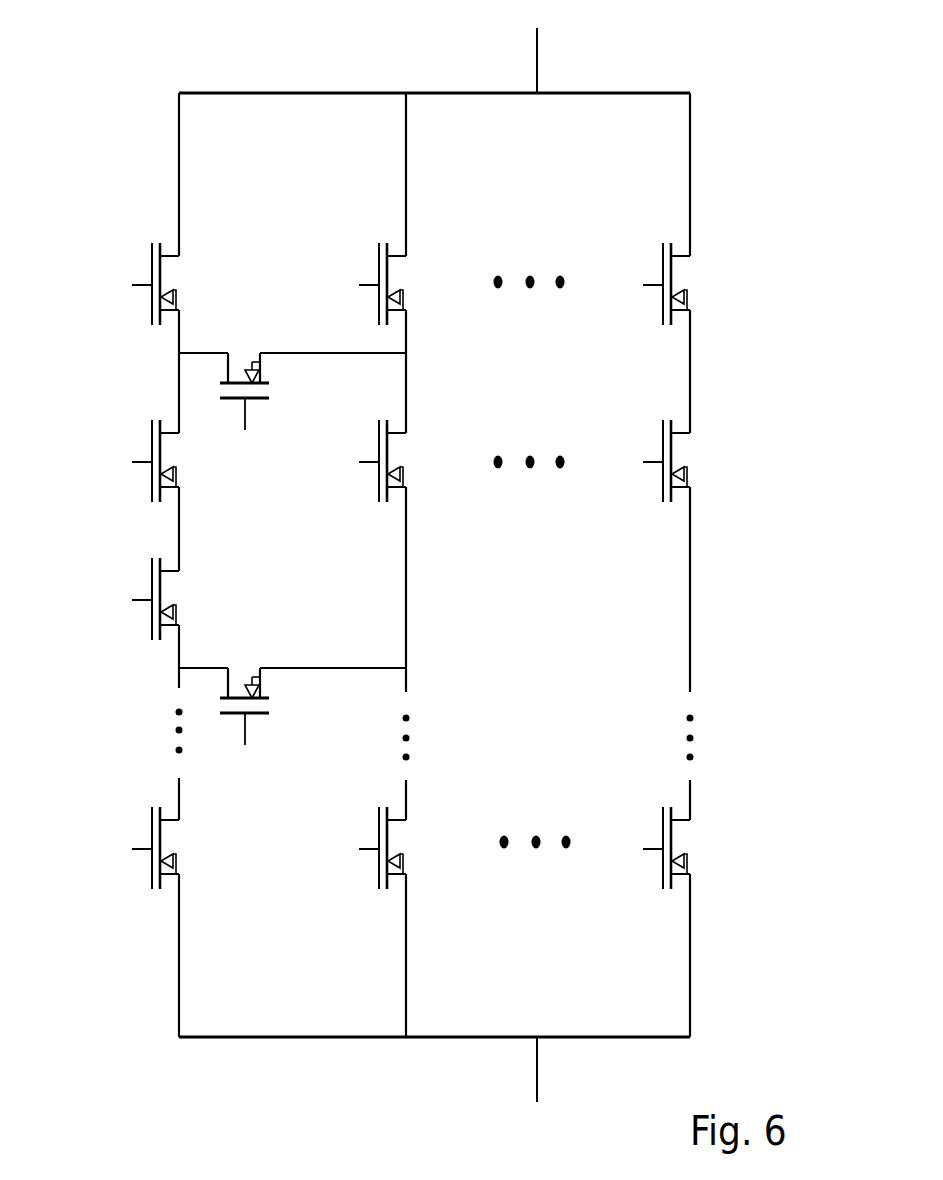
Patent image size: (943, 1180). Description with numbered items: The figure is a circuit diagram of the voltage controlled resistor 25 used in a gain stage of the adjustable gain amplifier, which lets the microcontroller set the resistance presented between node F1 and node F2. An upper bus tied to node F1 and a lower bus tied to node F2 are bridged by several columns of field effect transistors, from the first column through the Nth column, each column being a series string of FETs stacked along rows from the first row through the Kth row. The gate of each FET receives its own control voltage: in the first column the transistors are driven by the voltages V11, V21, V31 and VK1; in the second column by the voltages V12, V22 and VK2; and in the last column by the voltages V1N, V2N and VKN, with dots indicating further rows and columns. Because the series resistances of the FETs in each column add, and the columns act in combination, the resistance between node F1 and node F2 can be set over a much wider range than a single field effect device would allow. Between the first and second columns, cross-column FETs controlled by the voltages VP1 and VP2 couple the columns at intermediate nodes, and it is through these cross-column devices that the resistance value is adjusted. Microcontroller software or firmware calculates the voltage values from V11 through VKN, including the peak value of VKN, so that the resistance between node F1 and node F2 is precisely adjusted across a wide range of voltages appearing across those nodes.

The voltage controlled resistor 25 is at (422, 566).
The node F1 is at (550, 51).
The node F2 is at (550, 1079).
The voltage V11 is at (139, 284).
The voltage V21 is at (139, 461).
The voltage V31 is at (139, 599).
The voltage VK1 is at (139, 848).
The voltage V12 is at (367, 284).
The voltage V22 is at (367, 461).
The voltage VK2 is at (367, 848).
The voltage V1N is at (650, 284).
The voltage V2N is at (650, 461).
The voltage VKN is at (650, 848).
The cross-column control voltage VP1 is at (292, 415).
The cross-column control voltage VP2 is at (292, 729).